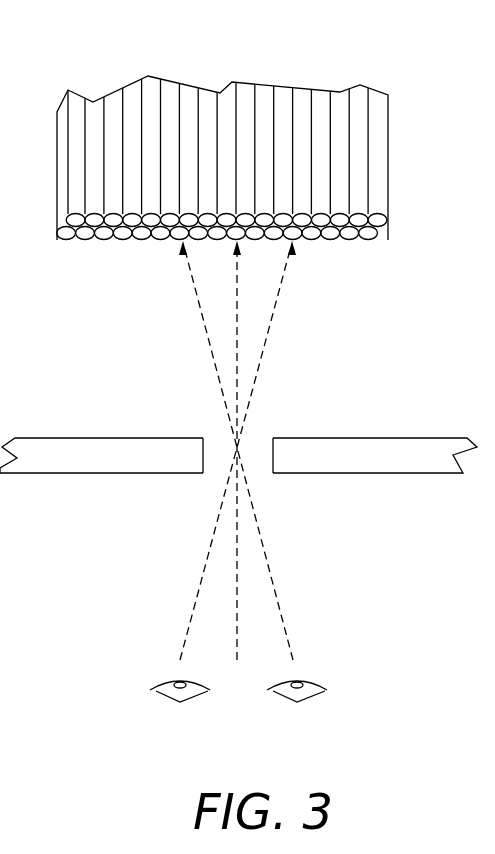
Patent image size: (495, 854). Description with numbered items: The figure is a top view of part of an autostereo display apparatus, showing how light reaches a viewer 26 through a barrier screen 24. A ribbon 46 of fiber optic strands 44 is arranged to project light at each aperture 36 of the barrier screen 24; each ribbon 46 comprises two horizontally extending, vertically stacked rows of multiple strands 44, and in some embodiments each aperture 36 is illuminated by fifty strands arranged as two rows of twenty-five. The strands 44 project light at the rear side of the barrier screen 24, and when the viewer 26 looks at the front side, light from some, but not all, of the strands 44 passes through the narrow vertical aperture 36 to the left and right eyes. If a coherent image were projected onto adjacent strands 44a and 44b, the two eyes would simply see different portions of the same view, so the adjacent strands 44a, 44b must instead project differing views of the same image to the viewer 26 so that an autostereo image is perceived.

The ribbon 46 is at (268, 164).
The strand 44 is at (387, 236).
The strand 44a is at (181, 235).
The strand 44b is at (294, 235).
The barrier screen 24 is at (373, 436).
The aperture 36 is at (201, 488).
The viewer 26 is at (337, 690).